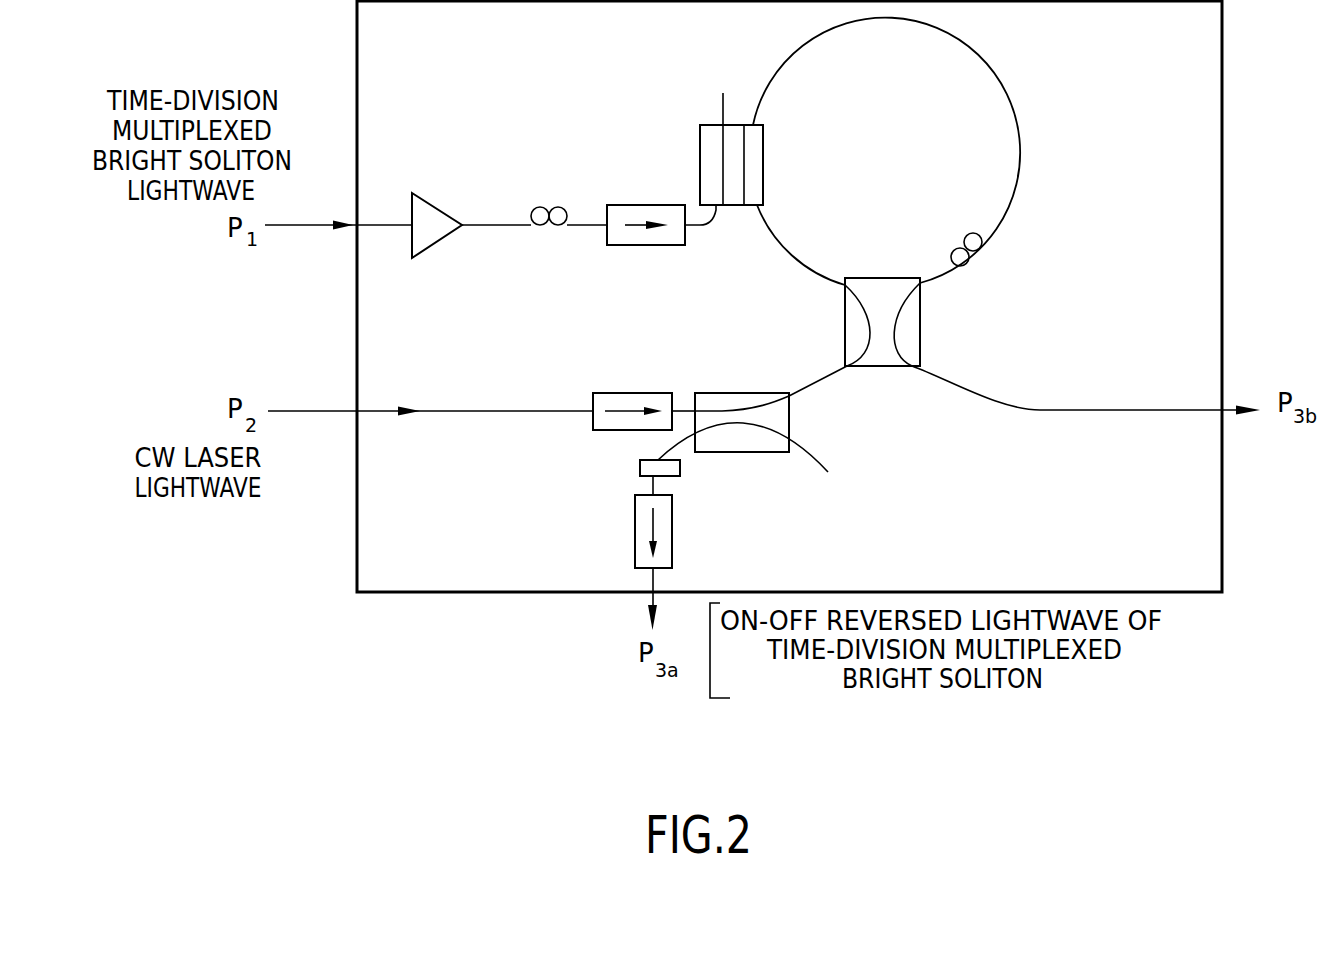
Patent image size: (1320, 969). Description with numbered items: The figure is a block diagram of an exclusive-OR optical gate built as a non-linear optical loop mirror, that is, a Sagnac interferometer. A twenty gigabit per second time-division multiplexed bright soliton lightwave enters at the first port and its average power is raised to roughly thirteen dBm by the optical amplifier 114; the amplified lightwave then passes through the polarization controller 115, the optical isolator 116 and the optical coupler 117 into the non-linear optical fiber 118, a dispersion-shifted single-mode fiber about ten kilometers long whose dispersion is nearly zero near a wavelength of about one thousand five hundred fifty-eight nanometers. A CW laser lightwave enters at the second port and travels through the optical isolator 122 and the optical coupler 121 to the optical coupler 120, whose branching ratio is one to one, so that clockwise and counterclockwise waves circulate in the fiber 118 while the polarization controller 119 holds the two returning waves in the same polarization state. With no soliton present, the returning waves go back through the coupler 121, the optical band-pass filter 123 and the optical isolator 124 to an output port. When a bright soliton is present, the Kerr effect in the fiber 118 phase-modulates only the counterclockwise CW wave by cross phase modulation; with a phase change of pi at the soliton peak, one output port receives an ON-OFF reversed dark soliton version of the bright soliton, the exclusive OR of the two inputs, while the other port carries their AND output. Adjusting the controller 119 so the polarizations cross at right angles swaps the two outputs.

The optical amplifier 114 is at (443, 243).
The polarization controller 115 is at (542, 208).
The optical isolator 116 is at (677, 265).
The optical coupler 117 is at (700, 148).
The non-linear optical fiber 118 is at (1018, 150).
The polarization controller 119 is at (981, 256).
The optical coupler 120 is at (983, 331).
The optical coupler 121 is at (763, 393).
The optical isolator 122 is at (653, 393).
The optical band-pass filter 123 is at (633, 468).
The optical isolator 124 is at (672, 502).